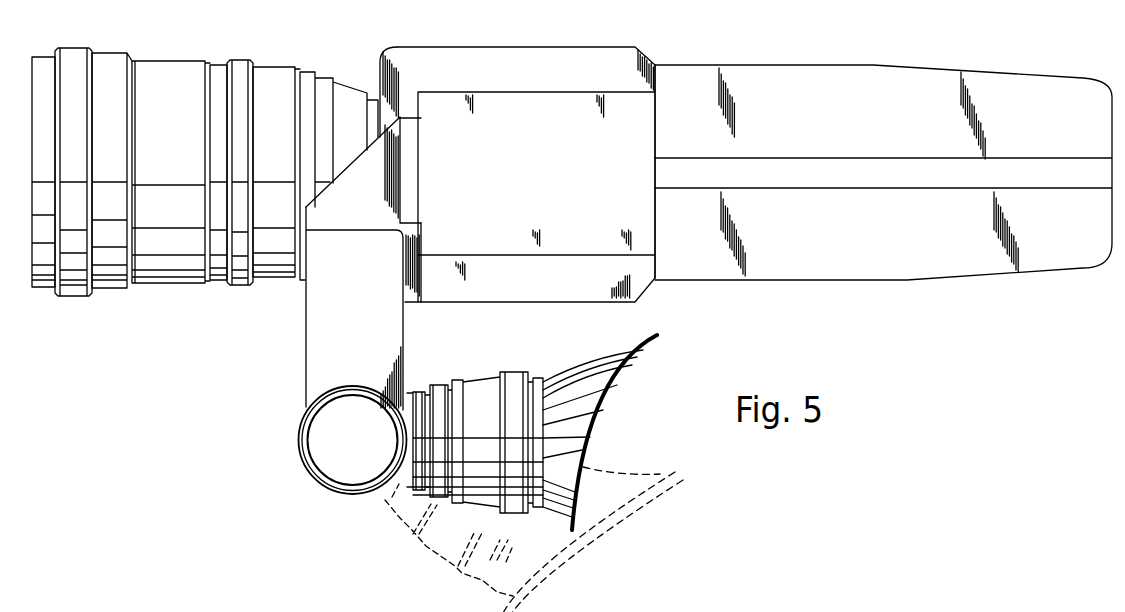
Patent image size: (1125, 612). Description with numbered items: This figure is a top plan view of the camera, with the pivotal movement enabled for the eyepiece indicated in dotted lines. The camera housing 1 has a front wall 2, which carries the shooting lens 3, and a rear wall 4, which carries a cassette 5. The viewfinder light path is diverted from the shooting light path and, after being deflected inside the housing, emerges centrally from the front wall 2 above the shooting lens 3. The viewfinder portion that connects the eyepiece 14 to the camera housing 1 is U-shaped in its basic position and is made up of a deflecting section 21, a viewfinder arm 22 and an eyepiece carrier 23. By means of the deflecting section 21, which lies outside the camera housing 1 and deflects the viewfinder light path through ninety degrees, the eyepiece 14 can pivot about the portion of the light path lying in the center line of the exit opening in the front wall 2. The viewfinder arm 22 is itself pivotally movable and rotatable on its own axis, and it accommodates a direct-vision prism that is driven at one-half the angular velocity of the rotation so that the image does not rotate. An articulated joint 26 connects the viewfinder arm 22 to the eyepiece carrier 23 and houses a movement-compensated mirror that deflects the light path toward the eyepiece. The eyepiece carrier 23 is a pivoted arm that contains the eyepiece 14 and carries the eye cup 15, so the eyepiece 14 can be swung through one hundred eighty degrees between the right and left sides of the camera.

The camera housing 1 is at (510, 55).
The front wall 2 is at (378, 68).
The shooting lens 3 is at (171, 73).
The rear wall 4 is at (657, 113).
The cassette 5 is at (857, 80).
The eyepiece 14 is at (480, 392).
The eye cup 15 is at (590, 373).
The deflecting section 21 is at (381, 166).
The viewfinder arm 22 is at (318, 332).
The eyepiece carrier 23 is at (393, 487).
The articulated joint 26 is at (328, 467).